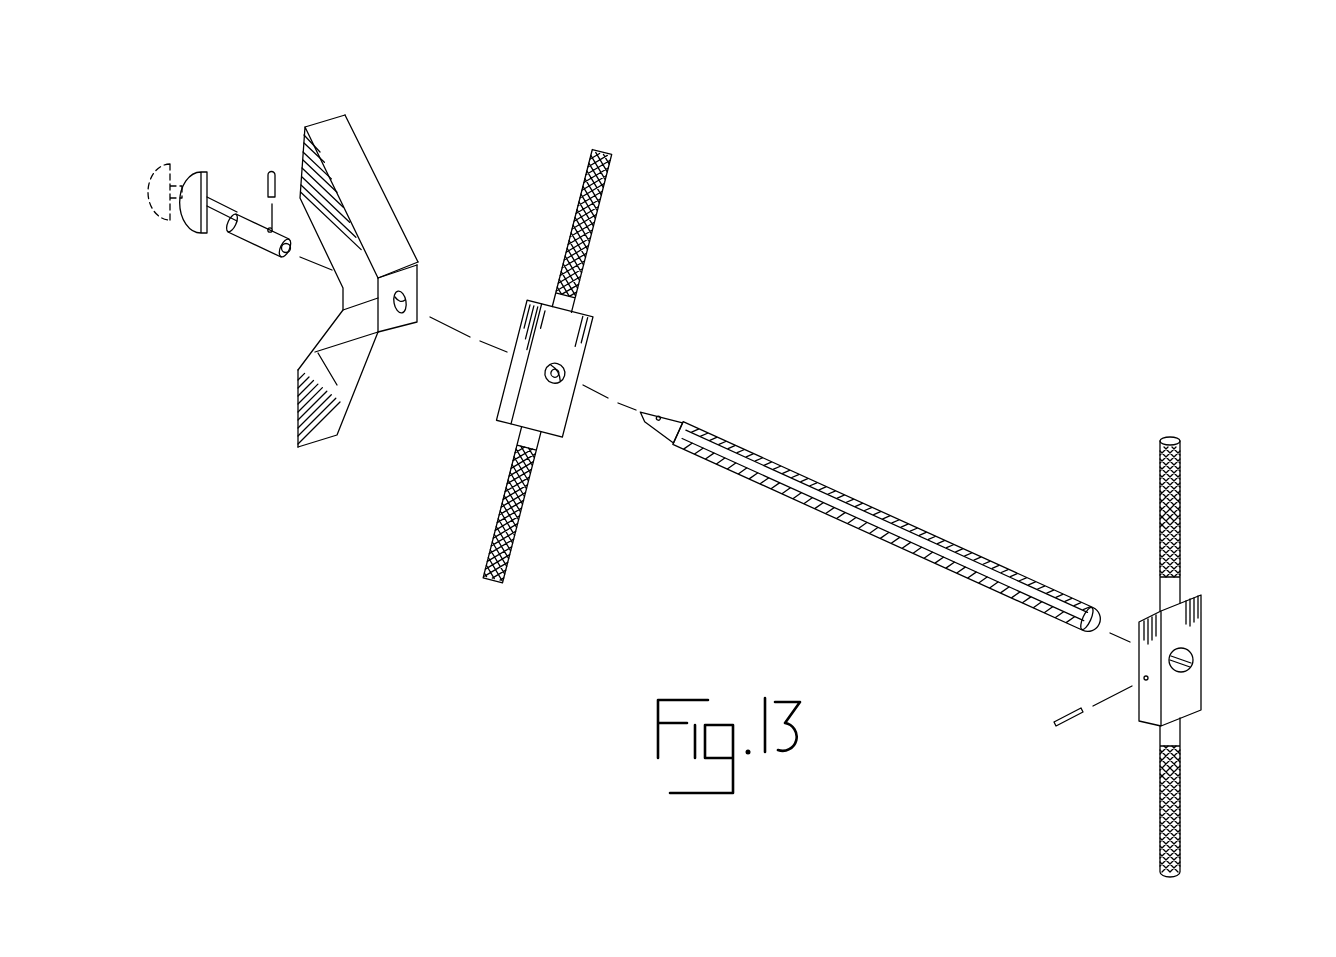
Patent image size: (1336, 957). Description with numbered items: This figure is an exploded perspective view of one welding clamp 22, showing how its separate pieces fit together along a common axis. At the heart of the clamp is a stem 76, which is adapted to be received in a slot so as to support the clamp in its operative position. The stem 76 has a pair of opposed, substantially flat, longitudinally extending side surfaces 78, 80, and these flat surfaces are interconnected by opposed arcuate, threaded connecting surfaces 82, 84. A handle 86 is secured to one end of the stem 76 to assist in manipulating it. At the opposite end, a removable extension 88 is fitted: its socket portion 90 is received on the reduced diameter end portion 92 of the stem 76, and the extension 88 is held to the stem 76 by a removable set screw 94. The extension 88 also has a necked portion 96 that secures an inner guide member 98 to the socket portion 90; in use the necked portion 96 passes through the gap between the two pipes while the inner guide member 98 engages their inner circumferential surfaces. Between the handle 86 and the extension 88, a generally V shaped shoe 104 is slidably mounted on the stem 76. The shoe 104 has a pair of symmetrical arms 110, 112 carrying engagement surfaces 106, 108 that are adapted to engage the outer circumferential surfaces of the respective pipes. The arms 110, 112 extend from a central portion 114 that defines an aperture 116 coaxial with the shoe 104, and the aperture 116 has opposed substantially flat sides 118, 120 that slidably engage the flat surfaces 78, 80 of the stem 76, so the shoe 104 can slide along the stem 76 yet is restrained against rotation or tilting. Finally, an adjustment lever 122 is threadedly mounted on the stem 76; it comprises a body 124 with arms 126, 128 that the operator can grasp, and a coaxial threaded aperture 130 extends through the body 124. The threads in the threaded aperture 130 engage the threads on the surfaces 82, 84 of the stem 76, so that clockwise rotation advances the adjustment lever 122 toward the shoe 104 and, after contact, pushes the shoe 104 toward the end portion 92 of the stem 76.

The clamp 22 is at (1005, 381).
The stem 76 is at (978, 537).
The side surface 78 is at (1043, 608).
The side surface 80 is at (1117, 622).
The threaded connecting surface 82 is at (1027, 577).
The threaded connecting surface 84 is at (961, 580).
The handle 86 is at (1190, 635).
The removable extension 88 is at (235, 169).
The socket portion 90 is at (257, 249).
The reduced diameter end portion 92 is at (650, 410).
The removable set screw 94 is at (266, 172).
The necked portion 96 is at (214, 236).
The inner guide member 98 is at (196, 192).
The V shaped shoe 104 is at (393, 205).
The engagement surface 106 is at (335, 114).
The engagement surface 108 is at (294, 430).
The arm 110 is at (340, 148).
The arm 112 is at (337, 383).
The central portion 114 is at (420, 265).
The aperture 116 is at (419, 296).
The flat side 118 is at (315, 352).
The flat side 120 is at (405, 298).
The adjustment lever 122 is at (631, 312).
The body 124 is at (562, 411).
The arm 126 is at (608, 176).
The arm 128 is at (530, 534).
The threaded aperture 130 is at (568, 375).